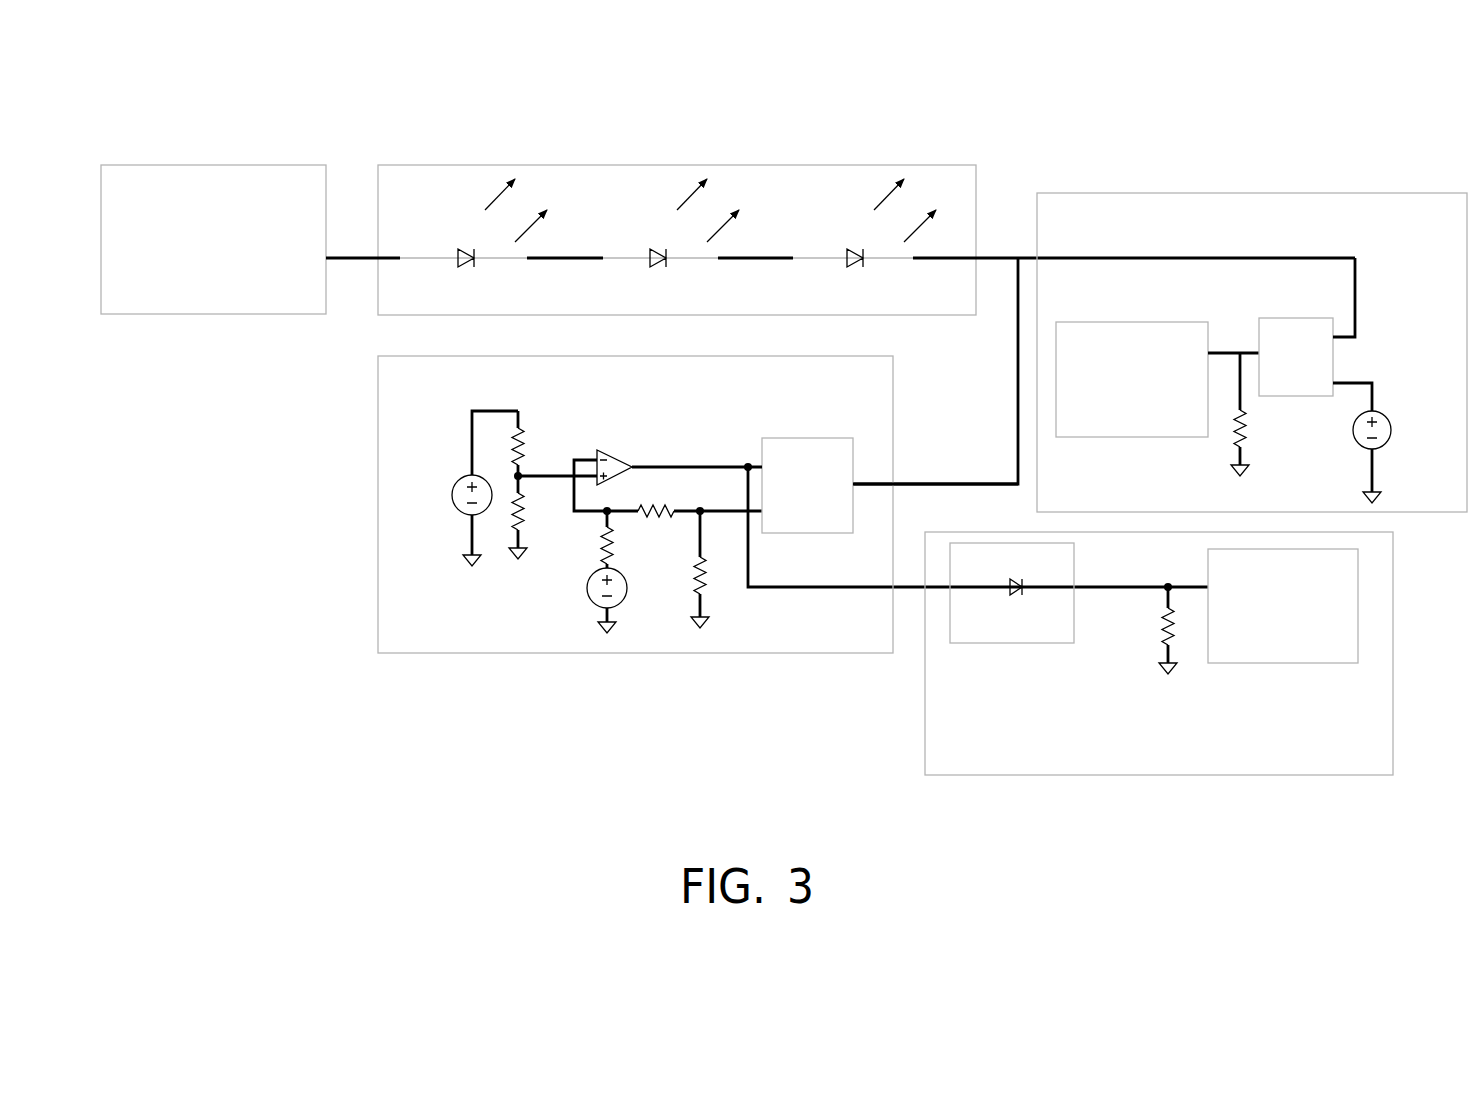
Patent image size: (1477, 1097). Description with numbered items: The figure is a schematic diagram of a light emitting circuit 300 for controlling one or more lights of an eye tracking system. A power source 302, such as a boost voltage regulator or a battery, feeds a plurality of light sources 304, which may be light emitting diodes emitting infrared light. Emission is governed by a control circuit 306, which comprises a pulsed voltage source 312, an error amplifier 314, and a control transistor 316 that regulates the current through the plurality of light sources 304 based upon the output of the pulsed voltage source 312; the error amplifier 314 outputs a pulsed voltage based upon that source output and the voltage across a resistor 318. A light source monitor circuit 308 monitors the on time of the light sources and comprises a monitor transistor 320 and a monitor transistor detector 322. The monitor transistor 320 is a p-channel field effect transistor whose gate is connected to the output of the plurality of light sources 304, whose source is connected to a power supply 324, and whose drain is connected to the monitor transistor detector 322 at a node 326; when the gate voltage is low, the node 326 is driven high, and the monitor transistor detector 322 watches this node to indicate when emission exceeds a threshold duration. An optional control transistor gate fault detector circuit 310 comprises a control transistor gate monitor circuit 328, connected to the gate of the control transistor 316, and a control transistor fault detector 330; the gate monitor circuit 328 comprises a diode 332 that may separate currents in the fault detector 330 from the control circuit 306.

The circuit 300 is at (362, 75).
The power source 302 is at (230, 264).
The plurality of light sources 304 is at (767, 165).
The control circuit 306 is at (763, 386).
The light source monitor circuit 308 is at (1447, 224).
The control transistor gate fault detector circuit 310 is at (1235, 764).
The pulsed voltage source 312 is at (452, 496).
The error amplifier 314 is at (604, 450).
The control transistor 316 is at (857, 462).
The resistor 318 is at (677, 569).
The monitor transistor 320 is at (1317, 318).
The monitor transistor detector 322 is at (1148, 428).
The power supply 324 is at (1393, 436).
The node 326 is at (1232, 352).
The control transistor gate monitor circuit 328 is at (1074, 628).
The control transistor fault detector 330 is at (1300, 656).
The diode 332 is at (1033, 598).